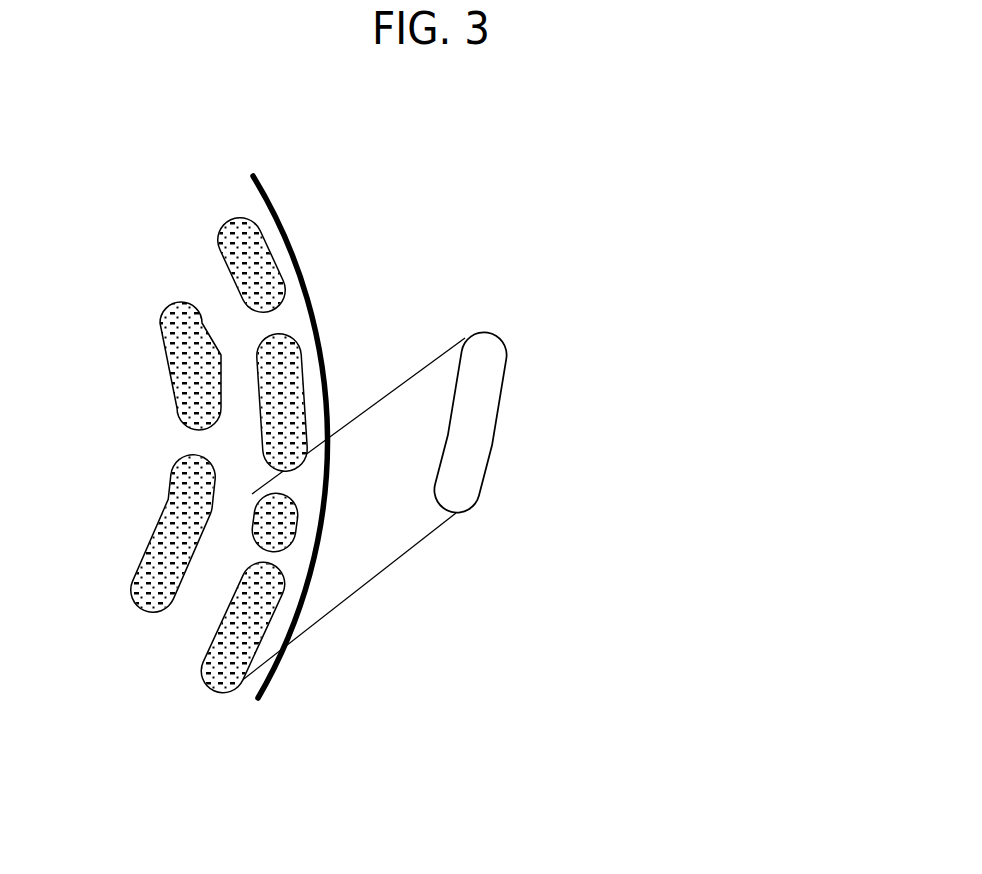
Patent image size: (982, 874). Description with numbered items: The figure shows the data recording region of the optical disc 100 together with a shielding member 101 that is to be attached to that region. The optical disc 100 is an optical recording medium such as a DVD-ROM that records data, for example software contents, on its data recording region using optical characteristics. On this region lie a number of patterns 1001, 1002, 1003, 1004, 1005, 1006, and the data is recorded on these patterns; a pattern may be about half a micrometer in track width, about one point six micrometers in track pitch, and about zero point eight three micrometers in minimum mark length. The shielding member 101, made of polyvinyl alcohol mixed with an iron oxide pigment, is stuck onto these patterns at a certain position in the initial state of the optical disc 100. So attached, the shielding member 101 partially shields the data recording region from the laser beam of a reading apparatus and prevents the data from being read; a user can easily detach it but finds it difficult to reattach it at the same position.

The optical disc 100 is at (293, 317).
The shielding member 101 is at (470, 457).
The pattern 1001 is at (182, 350).
The pattern 1002 is at (182, 520).
The pattern 1003 is at (252, 245).
The pattern 1004 is at (287, 400).
The pattern 1005 is at (277, 527).
The pattern 1006 is at (214, 676).